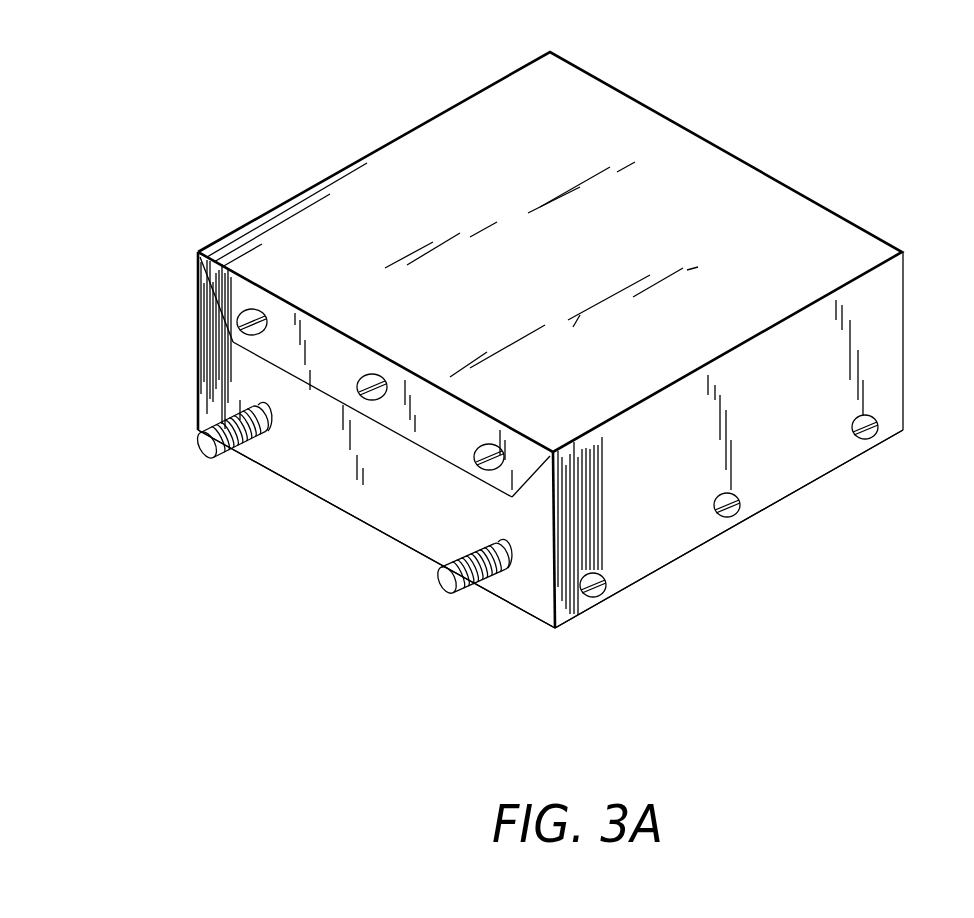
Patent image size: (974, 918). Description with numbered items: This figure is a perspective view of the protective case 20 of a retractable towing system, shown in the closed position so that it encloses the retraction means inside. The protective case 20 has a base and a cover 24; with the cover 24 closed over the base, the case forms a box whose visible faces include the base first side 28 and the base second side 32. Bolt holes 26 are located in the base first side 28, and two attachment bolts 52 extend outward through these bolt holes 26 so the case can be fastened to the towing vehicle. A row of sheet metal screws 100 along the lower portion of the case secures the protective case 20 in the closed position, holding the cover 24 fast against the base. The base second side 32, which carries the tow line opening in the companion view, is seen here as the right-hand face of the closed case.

The protective case 20 is at (410, 108).
The cover 24 is at (587, 268).
The base second side 32 is at (668, 118).
The base first side 28 is at (438, 517).
The attachment bolts 52 is at (213, 453).
The bolt holes 26 is at (268, 430).
The sheet metal screws 100 is at (593, 597).